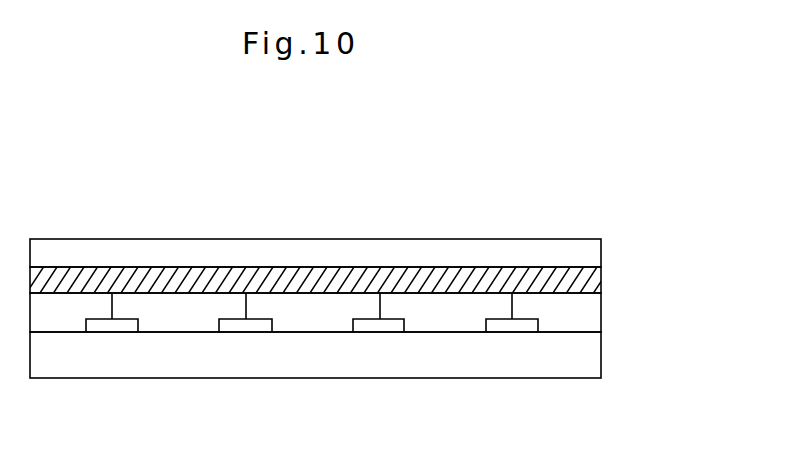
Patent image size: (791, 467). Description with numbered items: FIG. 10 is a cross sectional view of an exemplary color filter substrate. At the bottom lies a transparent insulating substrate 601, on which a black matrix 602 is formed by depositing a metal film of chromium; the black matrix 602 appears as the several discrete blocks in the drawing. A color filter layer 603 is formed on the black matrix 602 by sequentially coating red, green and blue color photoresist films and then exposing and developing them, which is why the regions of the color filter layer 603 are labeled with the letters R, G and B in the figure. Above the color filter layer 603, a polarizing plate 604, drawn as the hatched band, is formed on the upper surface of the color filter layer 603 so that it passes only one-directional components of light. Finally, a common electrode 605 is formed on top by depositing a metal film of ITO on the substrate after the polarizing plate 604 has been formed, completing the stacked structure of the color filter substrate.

The transparent insulating substrate 601 is at (600, 357).
The black matrix 602 is at (512, 326).
The color filter layer 603 is at (593, 306).
The polarizing plate 604 is at (583, 277).
The common electrode 605 is at (570, 250).